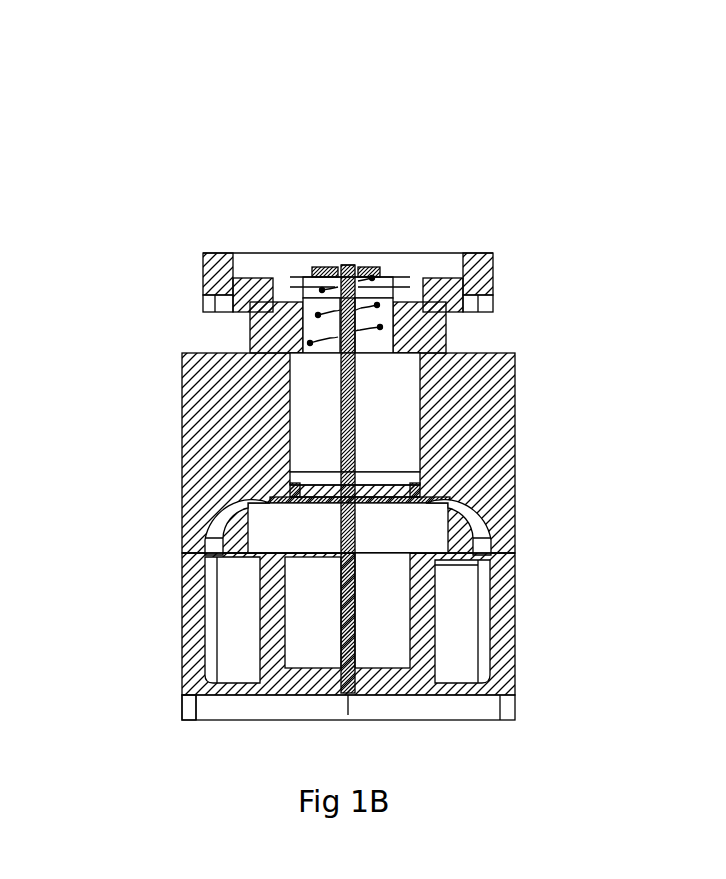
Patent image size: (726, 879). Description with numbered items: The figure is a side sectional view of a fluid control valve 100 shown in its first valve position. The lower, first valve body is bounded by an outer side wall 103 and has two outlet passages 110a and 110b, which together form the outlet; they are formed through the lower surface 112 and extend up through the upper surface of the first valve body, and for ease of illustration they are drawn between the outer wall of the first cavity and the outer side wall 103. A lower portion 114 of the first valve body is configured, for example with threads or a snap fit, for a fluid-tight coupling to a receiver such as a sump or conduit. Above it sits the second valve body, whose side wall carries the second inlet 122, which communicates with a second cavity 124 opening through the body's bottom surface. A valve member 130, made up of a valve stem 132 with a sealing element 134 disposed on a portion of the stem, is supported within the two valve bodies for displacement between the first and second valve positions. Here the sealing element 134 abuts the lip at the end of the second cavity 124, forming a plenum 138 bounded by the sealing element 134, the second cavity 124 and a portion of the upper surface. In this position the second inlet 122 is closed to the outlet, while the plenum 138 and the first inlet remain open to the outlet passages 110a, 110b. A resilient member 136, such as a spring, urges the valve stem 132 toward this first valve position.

The valve 100 is at (521, 169).
The outer side wall 103 is at (515, 594).
The outlet passage 110a is at (480, 650).
The outlet passage 110b is at (213, 624).
The lower surface 112 is at (189, 697).
The lower portion 114 is at (515, 710).
The second inlet channel 122 is at (420, 390).
The second cavity 124 is at (284, 524).
The valve member 130 is at (305, 427).
The valve stem 132 is at (337, 418).
The sealing element 134 is at (420, 496).
The resilient member 136 is at (377, 305).
The plenum 138 is at (424, 538).